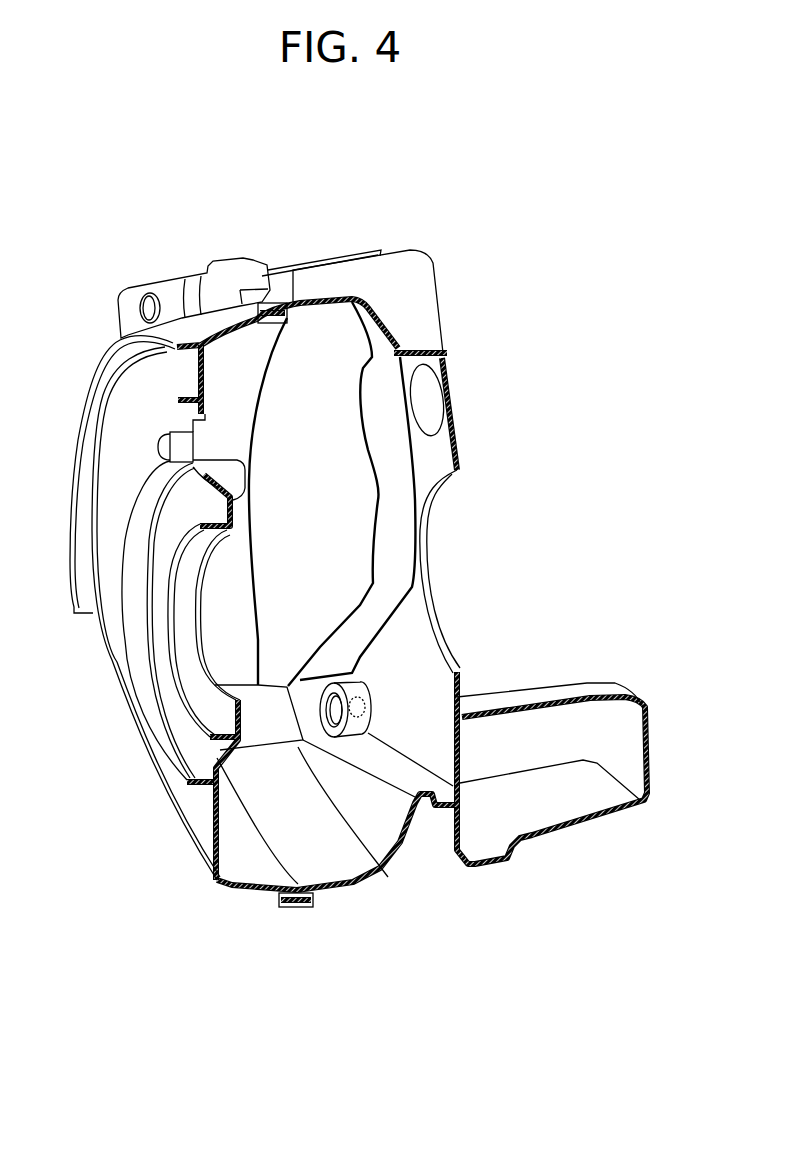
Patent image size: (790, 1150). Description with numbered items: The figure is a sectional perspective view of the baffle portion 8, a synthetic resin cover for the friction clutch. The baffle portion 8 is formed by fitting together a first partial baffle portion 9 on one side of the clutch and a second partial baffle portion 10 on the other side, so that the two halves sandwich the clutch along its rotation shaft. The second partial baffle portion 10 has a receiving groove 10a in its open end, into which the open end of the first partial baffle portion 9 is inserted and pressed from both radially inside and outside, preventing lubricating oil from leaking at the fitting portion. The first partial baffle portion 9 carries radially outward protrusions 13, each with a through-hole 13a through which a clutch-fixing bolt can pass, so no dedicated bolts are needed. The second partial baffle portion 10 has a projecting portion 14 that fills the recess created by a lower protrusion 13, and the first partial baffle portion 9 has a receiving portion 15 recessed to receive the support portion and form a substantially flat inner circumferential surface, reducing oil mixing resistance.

The baffle portion 8 is at (233, 243).
The first partial baffle portion 9 is at (357, 267).
The second partial baffle portion 10 is at (133, 297).
The receiving groove 10a is at (272, 302).
The protrusion 13 is at (313, 737).
The through-hole 13a is at (370, 693).
The projecting portion 14 is at (268, 718).
The receiving portion 15 is at (393, 520).